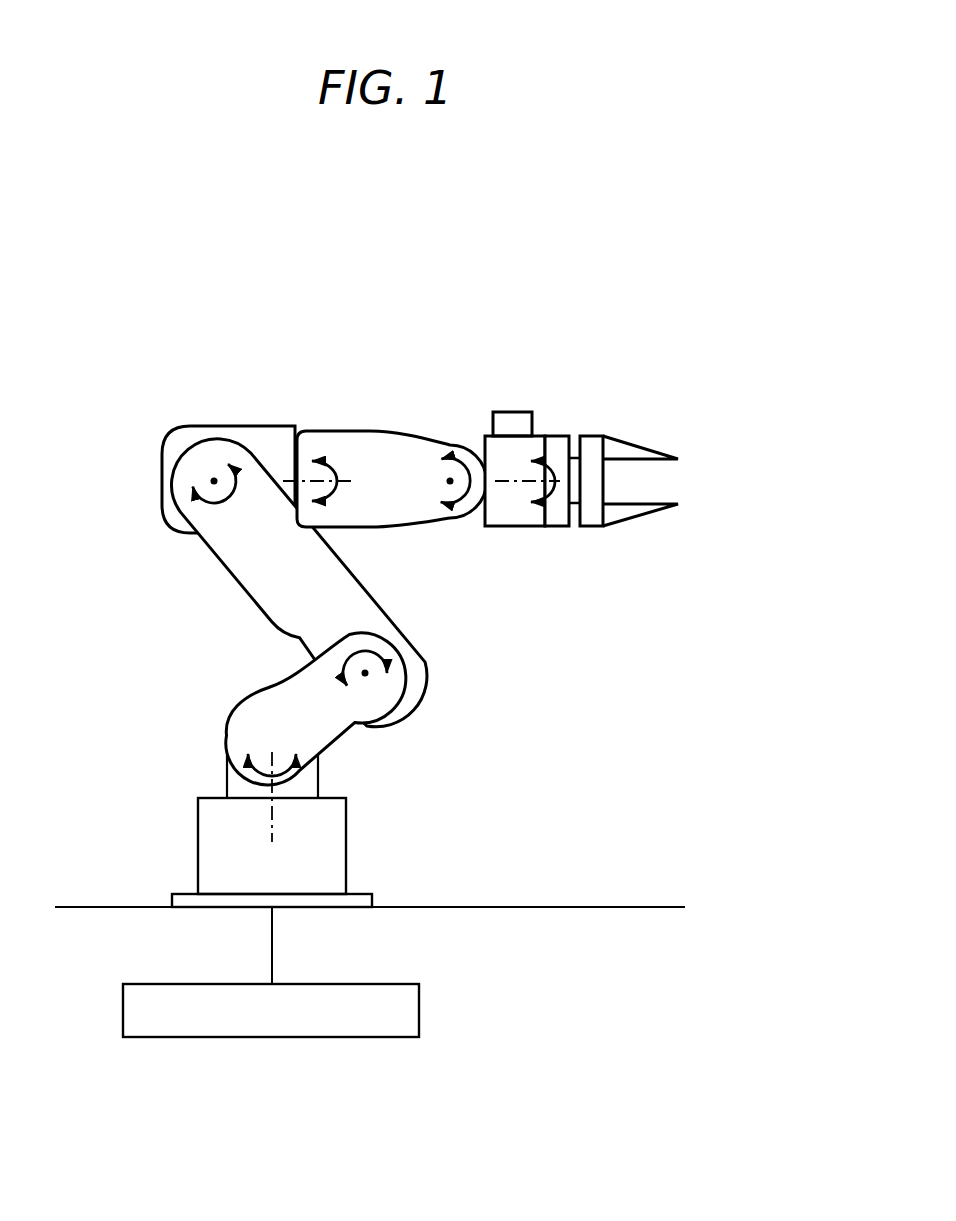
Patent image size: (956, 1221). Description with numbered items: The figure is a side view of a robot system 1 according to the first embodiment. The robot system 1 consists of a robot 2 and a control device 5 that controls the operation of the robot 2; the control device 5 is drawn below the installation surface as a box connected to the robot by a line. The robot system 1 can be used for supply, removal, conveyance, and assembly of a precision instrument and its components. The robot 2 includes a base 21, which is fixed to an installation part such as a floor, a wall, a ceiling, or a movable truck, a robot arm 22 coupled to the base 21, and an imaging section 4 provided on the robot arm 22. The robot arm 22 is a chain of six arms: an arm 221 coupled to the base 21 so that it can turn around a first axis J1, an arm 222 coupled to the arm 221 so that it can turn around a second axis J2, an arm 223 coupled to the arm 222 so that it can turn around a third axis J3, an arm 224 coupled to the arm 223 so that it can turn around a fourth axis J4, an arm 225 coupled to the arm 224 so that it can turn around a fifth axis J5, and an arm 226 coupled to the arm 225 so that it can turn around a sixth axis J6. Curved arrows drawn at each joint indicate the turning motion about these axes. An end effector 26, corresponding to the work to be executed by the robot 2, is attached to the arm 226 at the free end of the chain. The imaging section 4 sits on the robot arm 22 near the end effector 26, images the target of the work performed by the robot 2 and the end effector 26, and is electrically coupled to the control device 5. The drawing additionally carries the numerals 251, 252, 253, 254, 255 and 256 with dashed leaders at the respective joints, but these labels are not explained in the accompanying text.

The robot system 1 is at (637, 300).
The robot 2 is at (393, 407).
The imaging section 4 is at (514, 412).
The control device 5 is at (420, 1008).
The base 21 is at (340, 861).
The robot arm 22 is at (356, 425).
The end effector 26 is at (630, 508).
The arm 221 is at (233, 740).
The arm 222 is at (267, 597).
The arm 223 is at (172, 447).
The arm 224 is at (313, 443).
The arm 225 is at (514, 515).
The arm 226 is at (557, 515).
The first drive unit 251 is at (236, 793).
The second drive unit 252 is at (367, 680).
The third drive unit 253 is at (206, 457).
The fourth drive unit 254 is at (282, 487).
The fifth drive unit 255 is at (441, 456).
The sixth drive unit 256 is at (536, 440).
The first axis J1 is at (273, 815).
The second axis J2 is at (368, 678).
The third axis J3 is at (213, 481).
The fourth axis J4 is at (287, 478).
The fifth axis J5 is at (447, 483).
The sixth axis J6 is at (527, 447).